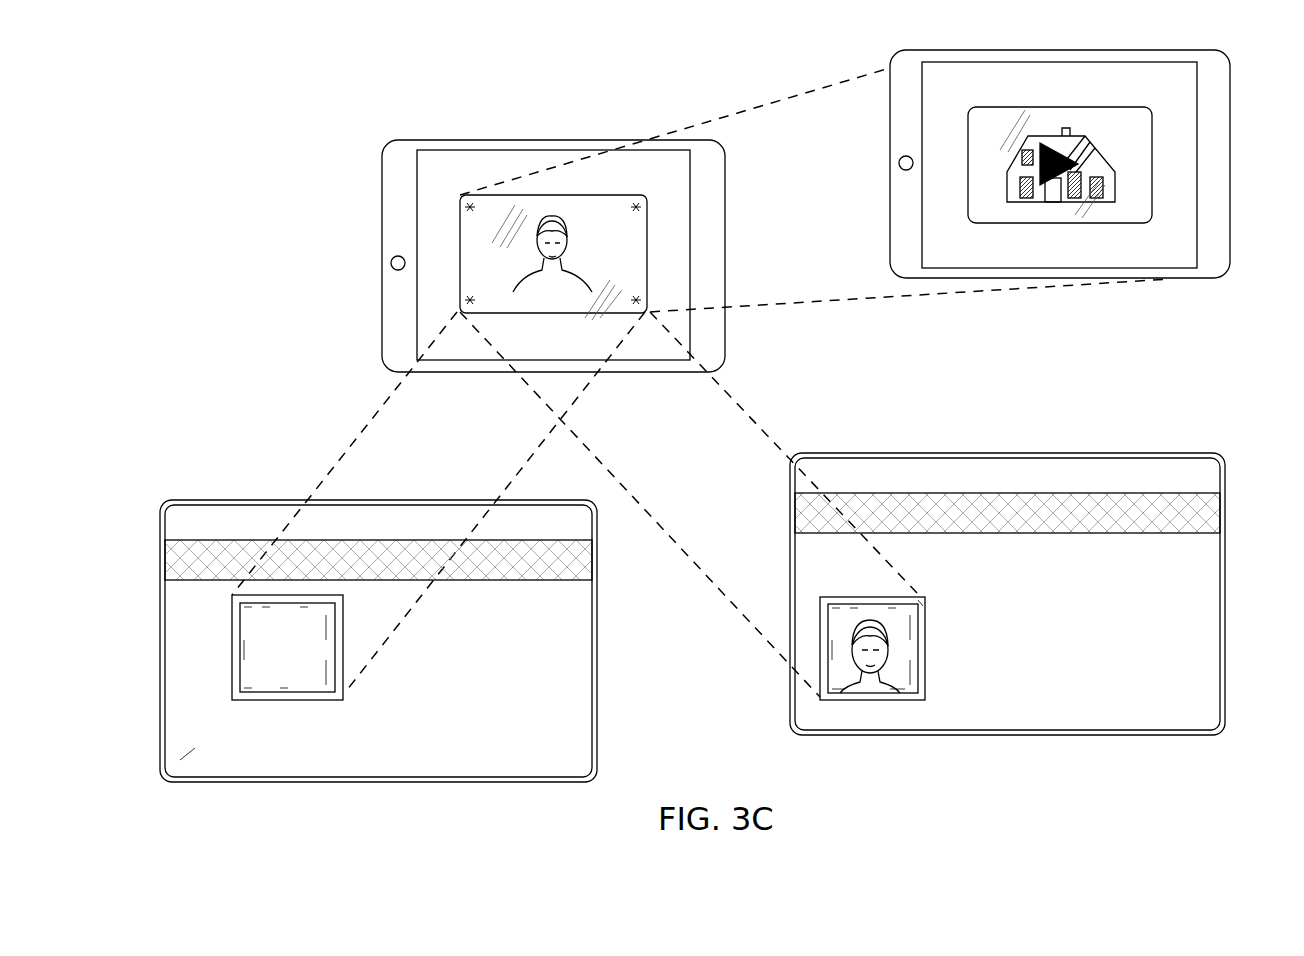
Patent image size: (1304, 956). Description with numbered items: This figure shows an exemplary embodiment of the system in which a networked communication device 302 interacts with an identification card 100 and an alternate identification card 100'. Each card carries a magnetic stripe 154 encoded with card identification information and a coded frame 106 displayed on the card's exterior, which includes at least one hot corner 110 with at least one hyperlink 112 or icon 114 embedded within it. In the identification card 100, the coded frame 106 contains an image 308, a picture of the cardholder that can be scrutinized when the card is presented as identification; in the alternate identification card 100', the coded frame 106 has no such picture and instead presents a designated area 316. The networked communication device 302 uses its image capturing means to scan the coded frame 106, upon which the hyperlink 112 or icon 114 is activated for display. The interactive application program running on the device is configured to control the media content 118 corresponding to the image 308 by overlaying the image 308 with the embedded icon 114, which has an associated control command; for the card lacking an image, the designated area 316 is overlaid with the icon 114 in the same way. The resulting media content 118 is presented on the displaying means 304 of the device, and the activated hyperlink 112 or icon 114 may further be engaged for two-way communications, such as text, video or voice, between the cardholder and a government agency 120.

The identification card 100 is at (1007, 573).
The identification card 100' is at (417, 641).
The coded frame 106 is at (195, 748).
The hot corner 110 is at (500, 212).
The hyperlink 112 is at (470, 200).
The icon 114 is at (640, 207).
The media content 118 is at (1068, 130).
The government agency 120 is at (1105, 150).
The magnetic stripe 154 is at (598, 558).
The networked communication device 302 is at (415, 140).
The displaying means 304 is at (435, 293).
The image 308 is at (878, 700).
The designated area 316 is at (228, 730).